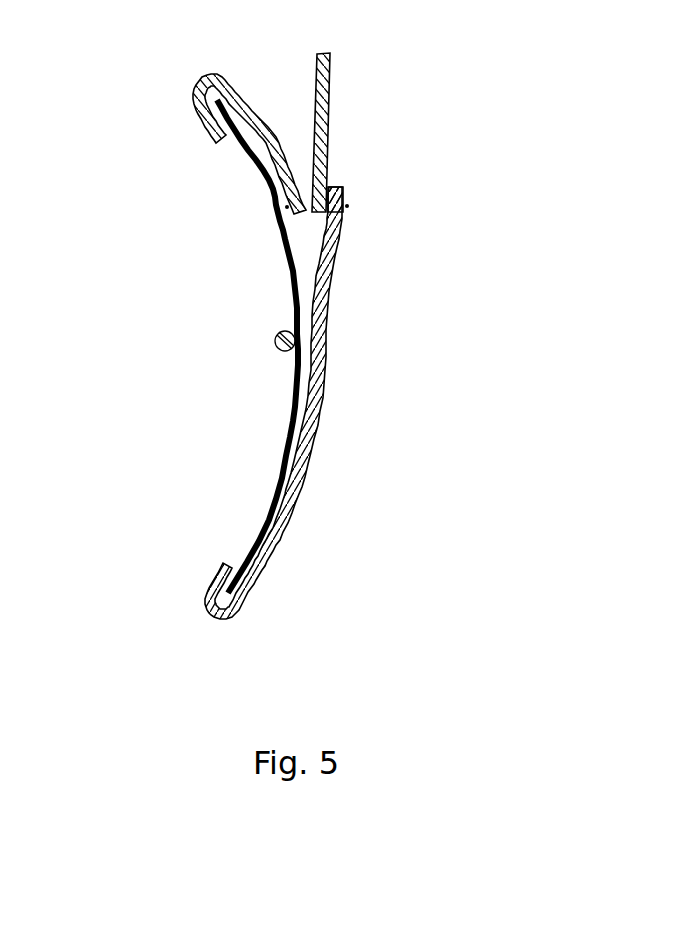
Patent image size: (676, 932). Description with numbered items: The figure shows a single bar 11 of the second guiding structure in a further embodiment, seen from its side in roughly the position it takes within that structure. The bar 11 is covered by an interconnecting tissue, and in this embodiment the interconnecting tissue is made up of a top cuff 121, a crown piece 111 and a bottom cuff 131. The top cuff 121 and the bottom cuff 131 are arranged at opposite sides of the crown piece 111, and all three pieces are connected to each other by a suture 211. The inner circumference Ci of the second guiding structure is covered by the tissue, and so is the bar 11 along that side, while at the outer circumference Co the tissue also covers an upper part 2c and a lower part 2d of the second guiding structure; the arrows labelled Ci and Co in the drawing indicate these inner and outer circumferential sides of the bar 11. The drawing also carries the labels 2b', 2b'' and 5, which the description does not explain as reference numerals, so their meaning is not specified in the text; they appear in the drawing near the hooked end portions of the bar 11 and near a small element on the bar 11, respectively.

The bar 11 is at (293, 300).
The top cuff 121 is at (200, 88).
The first end portion 2b' is at (268, 59).
The upper part 2c is at (157, 135).
The crown piece 111 is at (325, 118).
The bottom cuff 131 is at (277, 538).
The suture 211 is at (348, 205).
The second end portion 2b'' is at (280, 637).
The lower part 2d is at (183, 587).
The screw 5 is at (275, 340).
The outer circumference Co is at (175, 404).
The inner circumference Ci is at (441, 326).